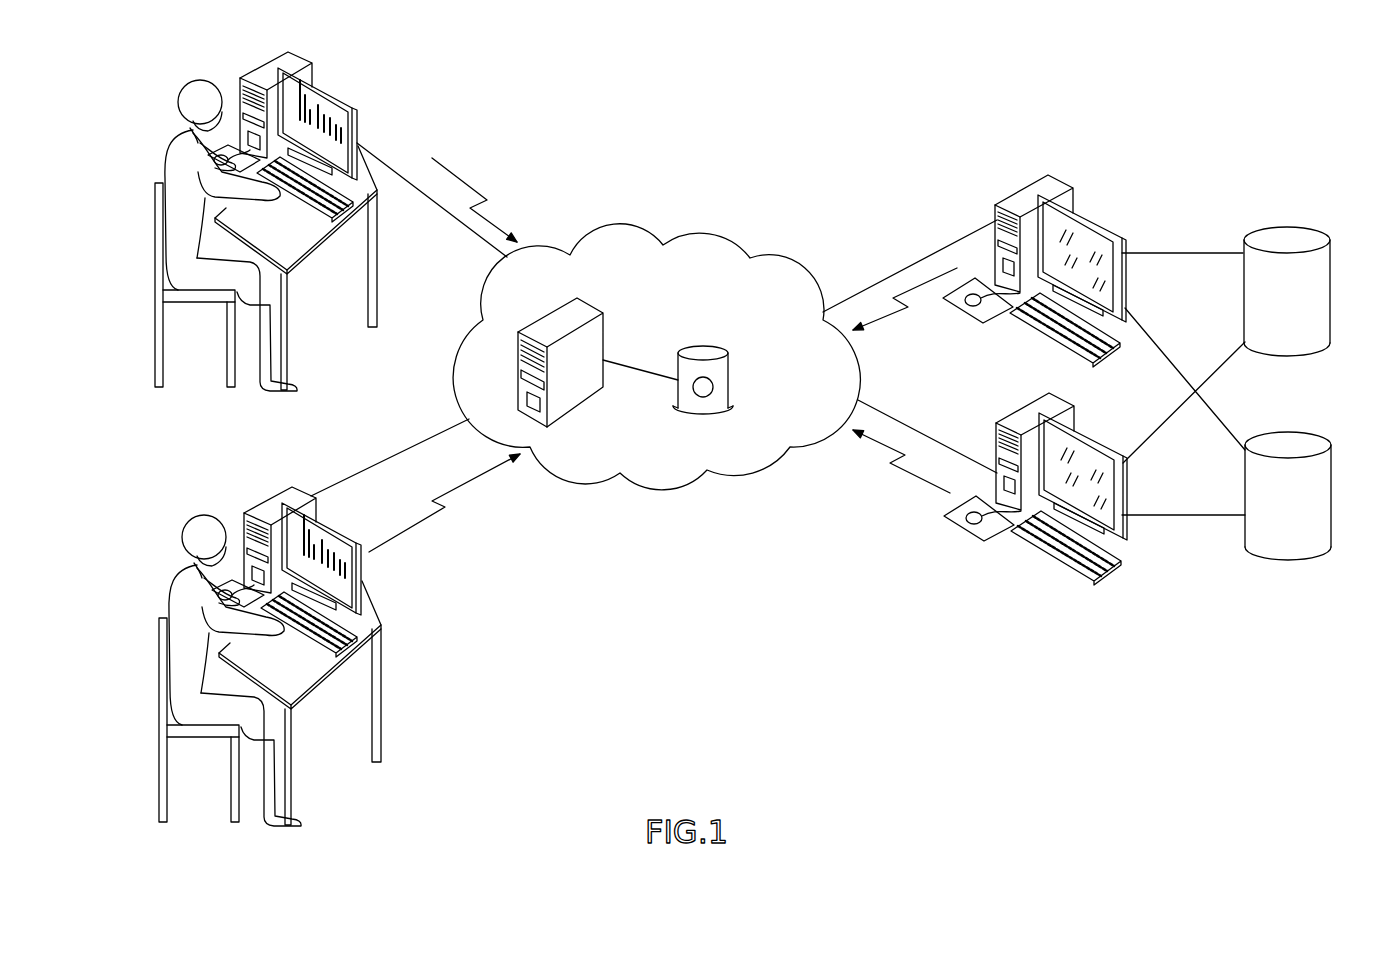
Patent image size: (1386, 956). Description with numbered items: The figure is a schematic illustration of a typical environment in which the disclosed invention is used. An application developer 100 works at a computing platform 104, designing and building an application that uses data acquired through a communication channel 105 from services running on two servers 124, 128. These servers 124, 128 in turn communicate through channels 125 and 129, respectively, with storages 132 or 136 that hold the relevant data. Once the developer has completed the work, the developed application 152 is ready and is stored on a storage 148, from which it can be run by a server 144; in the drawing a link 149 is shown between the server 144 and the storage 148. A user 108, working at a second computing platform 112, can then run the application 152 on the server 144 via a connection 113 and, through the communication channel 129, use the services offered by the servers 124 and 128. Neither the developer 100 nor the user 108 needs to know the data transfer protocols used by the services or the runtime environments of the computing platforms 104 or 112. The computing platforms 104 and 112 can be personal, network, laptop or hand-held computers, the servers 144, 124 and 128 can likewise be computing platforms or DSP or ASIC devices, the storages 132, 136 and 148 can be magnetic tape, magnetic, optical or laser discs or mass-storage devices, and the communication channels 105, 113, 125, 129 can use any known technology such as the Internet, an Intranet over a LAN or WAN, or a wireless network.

The application developer 100 is at (185, 86).
The computing platform 104 is at (340, 102).
The communication channel 105 is at (432, 203).
The user 108 is at (717, 233).
The computing platform 112 is at (350, 536).
The connection 113 is at (378, 460).
The server 124 is at (1107, 228).
The communication channel 125 is at (875, 282).
The server 128 is at (1090, 435).
The communication channel 129 is at (902, 421).
The storage 132 is at (1287, 226).
The storage 136 is at (1288, 431).
The server 144 is at (590, 307).
The storage 148 is at (703, 347).
The connection 149 is at (628, 362).
The developed application 152 is at (714, 387).